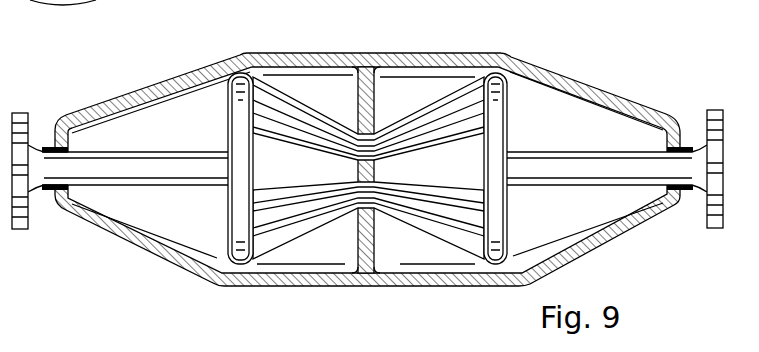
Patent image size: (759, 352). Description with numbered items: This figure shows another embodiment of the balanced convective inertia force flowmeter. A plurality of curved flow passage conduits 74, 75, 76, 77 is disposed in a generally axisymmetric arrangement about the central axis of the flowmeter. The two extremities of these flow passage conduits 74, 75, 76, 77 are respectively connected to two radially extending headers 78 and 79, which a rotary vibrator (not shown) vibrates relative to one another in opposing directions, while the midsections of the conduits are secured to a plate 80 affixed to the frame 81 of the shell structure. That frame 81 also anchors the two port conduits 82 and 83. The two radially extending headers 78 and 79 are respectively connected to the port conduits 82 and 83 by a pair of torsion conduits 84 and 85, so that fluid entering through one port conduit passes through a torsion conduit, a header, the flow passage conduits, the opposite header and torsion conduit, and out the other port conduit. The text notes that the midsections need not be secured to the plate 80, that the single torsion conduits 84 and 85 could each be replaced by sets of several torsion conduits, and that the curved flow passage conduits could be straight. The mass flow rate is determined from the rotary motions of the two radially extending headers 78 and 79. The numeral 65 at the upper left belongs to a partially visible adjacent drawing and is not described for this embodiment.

The adjacent figure element 65 is at (50, 4).
The flow passage conduit 74 is at (288, 113).
The flow passage conduit 75 is at (327, 148).
The flow passage conduit 76 is at (327, 196).
The flow passage conduit 77 is at (290, 229).
The radially extending header 78 is at (230, 112).
The radially extending header 79 is at (507, 107).
The plate 80 is at (373, 105).
The frame 81 is at (430, 289).
The port conduit 82 is at (42, 152).
The port conduit 83 is at (692, 168).
The torsion conduit 84 is at (147, 168).
The torsion conduit 85 is at (587, 168).